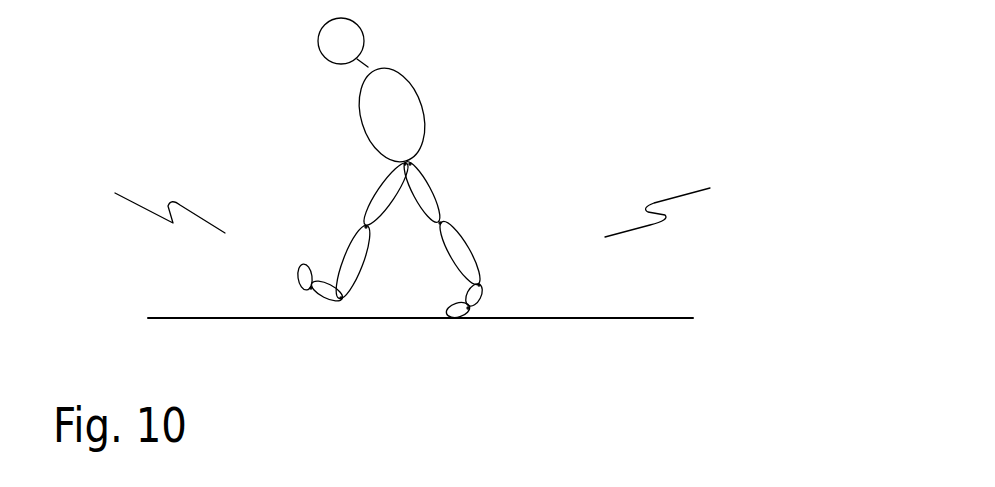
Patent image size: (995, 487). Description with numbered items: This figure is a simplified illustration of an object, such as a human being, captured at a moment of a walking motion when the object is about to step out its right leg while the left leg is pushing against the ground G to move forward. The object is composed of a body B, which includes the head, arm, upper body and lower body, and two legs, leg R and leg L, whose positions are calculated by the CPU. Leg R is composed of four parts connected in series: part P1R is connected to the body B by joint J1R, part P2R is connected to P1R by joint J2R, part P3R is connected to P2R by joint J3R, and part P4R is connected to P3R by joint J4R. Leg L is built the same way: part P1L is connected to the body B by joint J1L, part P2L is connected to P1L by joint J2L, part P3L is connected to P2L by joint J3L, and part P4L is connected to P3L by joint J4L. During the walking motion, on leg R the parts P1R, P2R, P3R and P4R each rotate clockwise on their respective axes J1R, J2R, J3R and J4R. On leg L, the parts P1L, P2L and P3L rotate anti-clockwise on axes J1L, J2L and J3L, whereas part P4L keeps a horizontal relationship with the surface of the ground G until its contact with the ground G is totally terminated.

The body B is at (413, 88).
The joint J1R is at (398, 163).
The joint J1L is at (420, 163).
The part P1R is at (388, 195).
The part P1L is at (425, 190).
The joint J2R is at (358, 227).
The joint J2L is at (447, 220).
The part P2R is at (362, 263).
The part P2L is at (473, 262).
The joint J3R is at (342, 298).
The joint J3L is at (483, 285).
The part P3R is at (323, 302).
The part P3L is at (475, 302).
The joint J4R is at (310, 290).
The joint J4L is at (475, 313).
The part P4R is at (300, 285).
The part P4L is at (448, 315).
The ground G is at (412, 340).
The leg R is at (153, 206).
The leg L is at (669, 208).